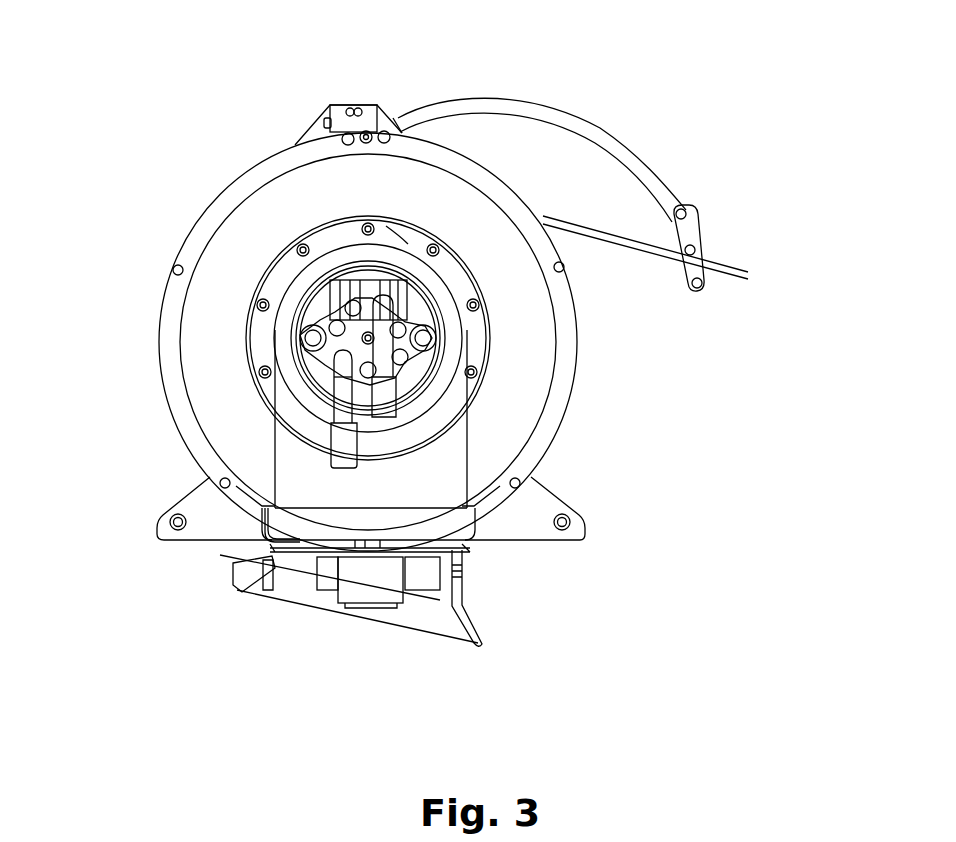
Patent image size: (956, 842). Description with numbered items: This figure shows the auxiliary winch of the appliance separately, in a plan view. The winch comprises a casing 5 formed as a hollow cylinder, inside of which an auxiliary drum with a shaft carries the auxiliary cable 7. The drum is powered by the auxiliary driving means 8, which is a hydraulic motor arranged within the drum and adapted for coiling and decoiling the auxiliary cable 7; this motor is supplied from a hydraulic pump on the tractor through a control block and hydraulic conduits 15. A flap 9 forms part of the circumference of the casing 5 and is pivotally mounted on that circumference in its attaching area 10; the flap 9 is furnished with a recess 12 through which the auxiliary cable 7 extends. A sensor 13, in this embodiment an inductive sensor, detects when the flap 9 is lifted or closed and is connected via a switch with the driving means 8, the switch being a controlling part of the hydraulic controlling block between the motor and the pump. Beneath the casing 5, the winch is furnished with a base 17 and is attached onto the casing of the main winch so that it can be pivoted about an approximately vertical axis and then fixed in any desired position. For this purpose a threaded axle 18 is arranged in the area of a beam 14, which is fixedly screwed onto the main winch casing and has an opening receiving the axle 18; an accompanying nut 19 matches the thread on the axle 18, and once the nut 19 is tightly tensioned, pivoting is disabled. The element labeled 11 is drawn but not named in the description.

The casing 5 is at (212, 200).
The auxiliary cable 7 is at (735, 278).
The auxiliary driving means 8 is at (310, 320).
The flap 9 is at (560, 108).
The attaching area 10 is at (392, 115).
The link 11 is at (681, 203).
The recess 12 is at (700, 254).
The sensor 13 is at (328, 105).
The beam 14 is at (462, 582).
The hydraulic conduits 15 is at (388, 385).
The base 17 is at (477, 544).
The axle 18 is at (300, 548).
The nut 19 is at (403, 590).